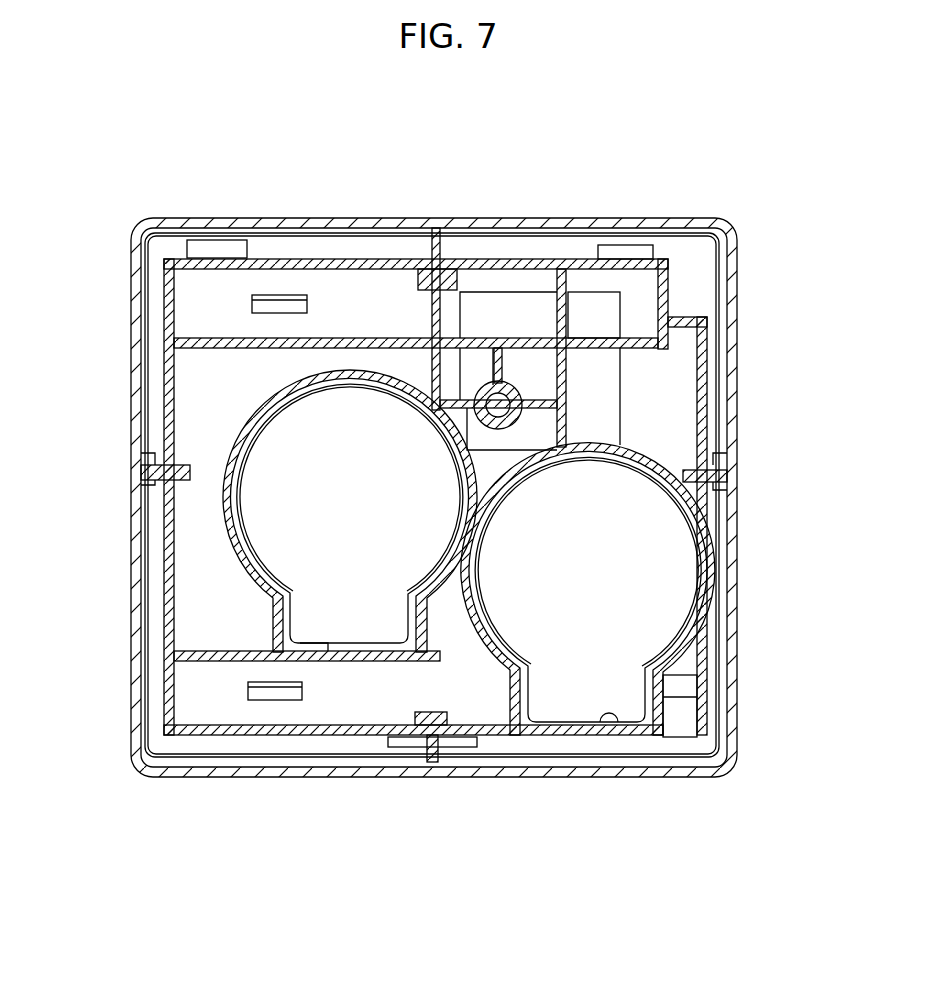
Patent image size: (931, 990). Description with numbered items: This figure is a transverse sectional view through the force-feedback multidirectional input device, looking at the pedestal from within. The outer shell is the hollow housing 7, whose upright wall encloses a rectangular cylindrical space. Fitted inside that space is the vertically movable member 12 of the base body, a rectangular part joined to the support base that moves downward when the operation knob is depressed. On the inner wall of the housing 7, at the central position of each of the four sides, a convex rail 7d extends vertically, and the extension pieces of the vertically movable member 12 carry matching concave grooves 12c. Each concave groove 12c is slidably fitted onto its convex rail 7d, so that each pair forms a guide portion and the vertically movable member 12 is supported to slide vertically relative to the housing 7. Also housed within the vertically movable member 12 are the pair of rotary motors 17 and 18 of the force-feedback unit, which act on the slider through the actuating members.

The housing 7 is at (706, 226).
The convex rails 7d is at (428, 243).
The vertically movable member 12 is at (172, 284).
The concave grooves 12c is at (452, 272).
The rotary motor 17 is at (682, 572).
The rotary motor 18 is at (272, 528).